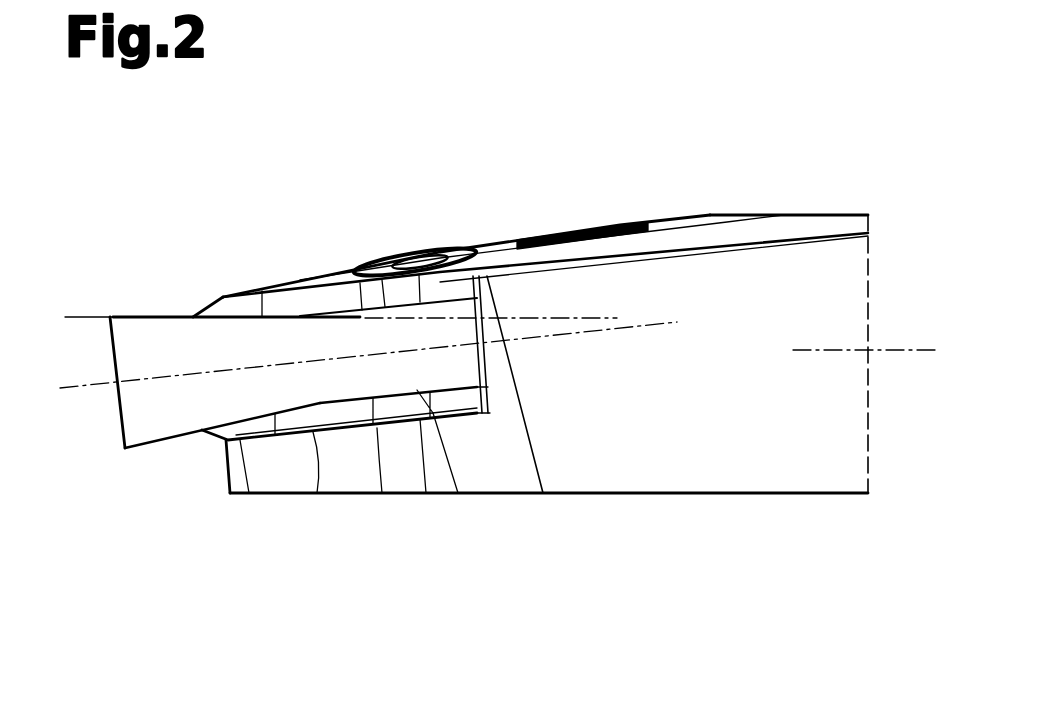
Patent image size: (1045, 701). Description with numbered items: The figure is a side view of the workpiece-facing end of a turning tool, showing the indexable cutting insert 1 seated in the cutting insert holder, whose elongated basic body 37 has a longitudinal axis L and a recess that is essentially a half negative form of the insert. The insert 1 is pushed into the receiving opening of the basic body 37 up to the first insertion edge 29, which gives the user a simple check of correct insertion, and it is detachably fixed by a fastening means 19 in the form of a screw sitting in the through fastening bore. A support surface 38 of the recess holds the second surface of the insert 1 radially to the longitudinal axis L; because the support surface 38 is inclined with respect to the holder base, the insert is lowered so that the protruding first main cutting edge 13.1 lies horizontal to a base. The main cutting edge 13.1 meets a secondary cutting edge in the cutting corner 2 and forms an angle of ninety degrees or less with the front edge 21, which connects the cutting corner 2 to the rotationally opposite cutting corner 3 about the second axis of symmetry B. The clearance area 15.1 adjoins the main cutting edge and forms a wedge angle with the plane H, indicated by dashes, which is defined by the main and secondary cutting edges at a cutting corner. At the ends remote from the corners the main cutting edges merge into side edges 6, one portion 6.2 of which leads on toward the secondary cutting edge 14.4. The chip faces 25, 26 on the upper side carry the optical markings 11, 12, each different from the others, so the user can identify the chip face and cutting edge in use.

The indexable cutting insert 1 is at (177, 407).
The cutting corner 2 is at (107, 320).
The cutting corner 3 is at (127, 447).
The side edge 6 is at (380, 268).
The clamping element lower portion 6.2 is at (447, 493).
The first optical marking 11 is at (318, 272).
The second optical marking 12 is at (560, 238).
The first main cutting edge 13.1 is at (140, 317).
The secondary cutting edge 14.4 is at (202, 430).
The clearance area 15.1 is at (250, 382).
The fastening means 19 is at (446, 255).
The front edge 21 is at (122, 427).
The chip face 25 is at (382, 493).
The chip face 26 is at (500, 242).
The first insertion edge 29 is at (483, 355).
The basic body 37 is at (783, 427).
The support surface 38 is at (320, 493).
The second axis of symmetry B is at (613, 330).
The plane H is at (587, 317).
The longitudinal axis L is at (880, 350).